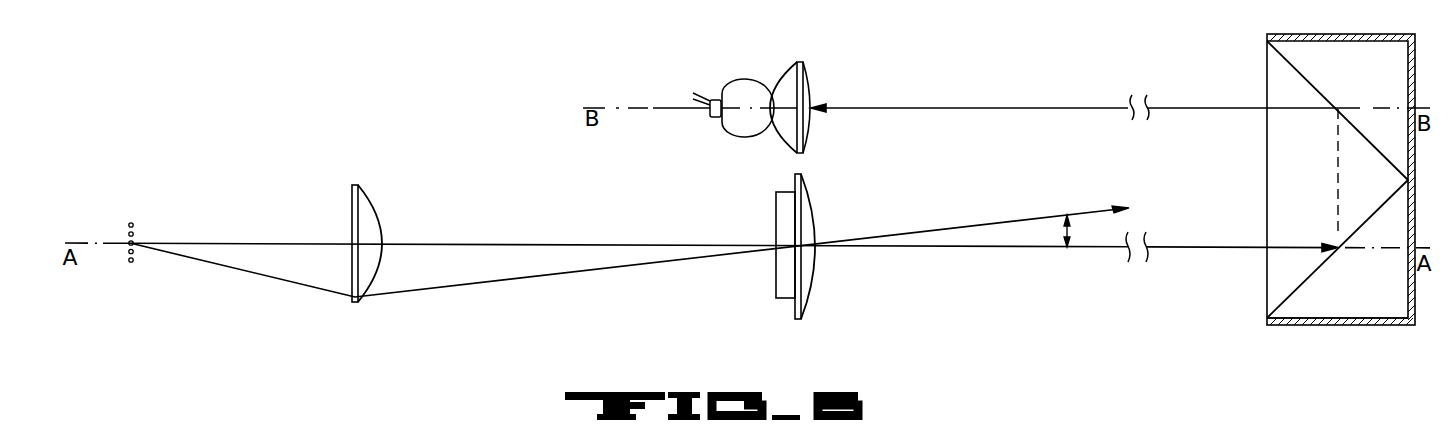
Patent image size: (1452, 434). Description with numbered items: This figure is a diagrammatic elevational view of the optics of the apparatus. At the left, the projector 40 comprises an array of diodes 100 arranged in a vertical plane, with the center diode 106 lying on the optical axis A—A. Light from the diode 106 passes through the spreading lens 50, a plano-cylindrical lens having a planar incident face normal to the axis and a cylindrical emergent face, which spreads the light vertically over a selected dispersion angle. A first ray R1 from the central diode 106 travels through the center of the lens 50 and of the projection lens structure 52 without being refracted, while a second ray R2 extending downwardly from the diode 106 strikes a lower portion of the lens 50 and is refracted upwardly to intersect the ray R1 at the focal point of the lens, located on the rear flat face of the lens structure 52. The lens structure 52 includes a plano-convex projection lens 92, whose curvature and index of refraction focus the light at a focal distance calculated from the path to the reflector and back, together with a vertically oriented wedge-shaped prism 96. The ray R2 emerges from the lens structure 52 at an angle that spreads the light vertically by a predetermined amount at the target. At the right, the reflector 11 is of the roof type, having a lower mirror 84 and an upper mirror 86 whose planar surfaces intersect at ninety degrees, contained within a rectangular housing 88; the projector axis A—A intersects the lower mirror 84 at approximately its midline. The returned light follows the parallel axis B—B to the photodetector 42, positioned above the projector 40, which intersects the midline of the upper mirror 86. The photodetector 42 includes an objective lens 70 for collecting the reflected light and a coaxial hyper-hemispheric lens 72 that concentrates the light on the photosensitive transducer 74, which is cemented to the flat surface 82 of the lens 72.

The reflector 11 is at (1302, 198).
The projector 40 is at (600, 289).
The photodetector 42 is at (789, 91).
The spreading lens 50 is at (361, 195).
The projection lens structure 52 is at (810, 239).
The objective lens 70 is at (786, 73).
The hyper-hemispheric lens 72 is at (746, 82).
The photosensitive transducer 74 is at (714, 118).
The flat surface 82 is at (716, 98).
The lower mirror 84 is at (1286, 299).
The upper mirror 86 is at (1284, 60).
The rectangular housing 88 is at (1370, 326).
The plano-convex projection lens 92 is at (806, 283).
The wedge-shaped prism 96 is at (779, 279).
The array of diodes 100 is at (131, 215).
The center diode 106 is at (134, 242).
The first ray R1 is at (935, 249).
The second ray R2 is at (935, 230).